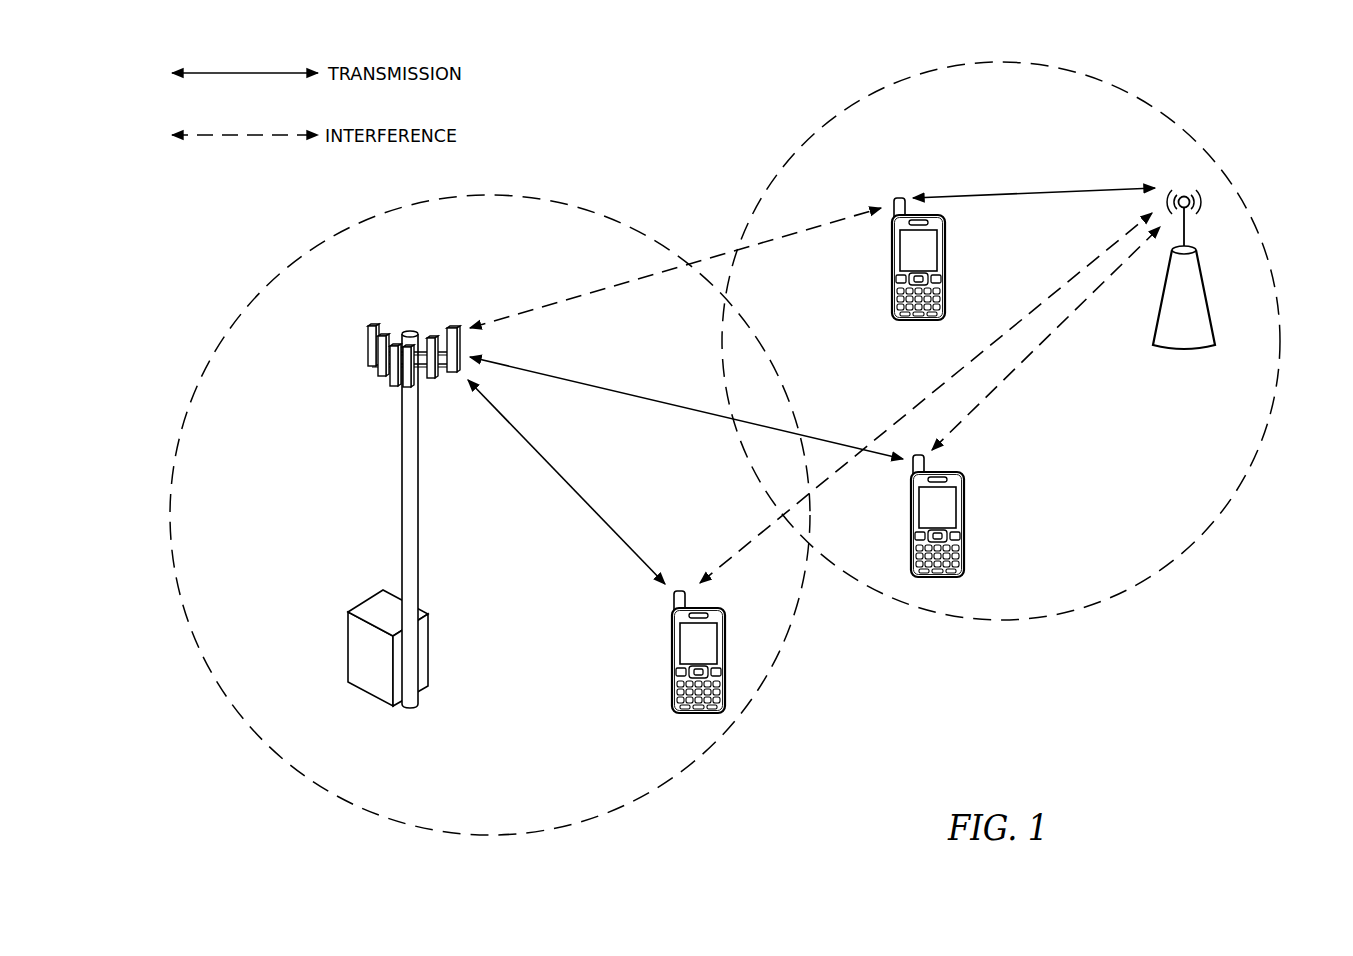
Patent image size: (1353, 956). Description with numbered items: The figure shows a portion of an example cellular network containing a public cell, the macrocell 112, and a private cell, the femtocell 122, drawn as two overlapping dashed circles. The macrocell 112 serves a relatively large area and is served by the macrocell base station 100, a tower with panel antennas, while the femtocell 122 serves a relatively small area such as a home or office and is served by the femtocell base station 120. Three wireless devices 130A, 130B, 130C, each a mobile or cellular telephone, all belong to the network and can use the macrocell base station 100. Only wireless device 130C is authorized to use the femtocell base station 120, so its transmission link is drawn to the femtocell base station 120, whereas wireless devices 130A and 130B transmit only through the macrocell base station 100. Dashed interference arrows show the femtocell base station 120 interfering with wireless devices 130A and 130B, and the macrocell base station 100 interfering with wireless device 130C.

The macrocell base station 100 is at (368, 432).
The macrocell 112 is at (272, 282).
The femtocell base station 120 is at (1132, 313).
The femtocell 122 is at (1204, 150).
The wireless device 130A is at (672, 660).
The wireless device 130B is at (964, 520).
The wireless device 130C is at (892, 258).